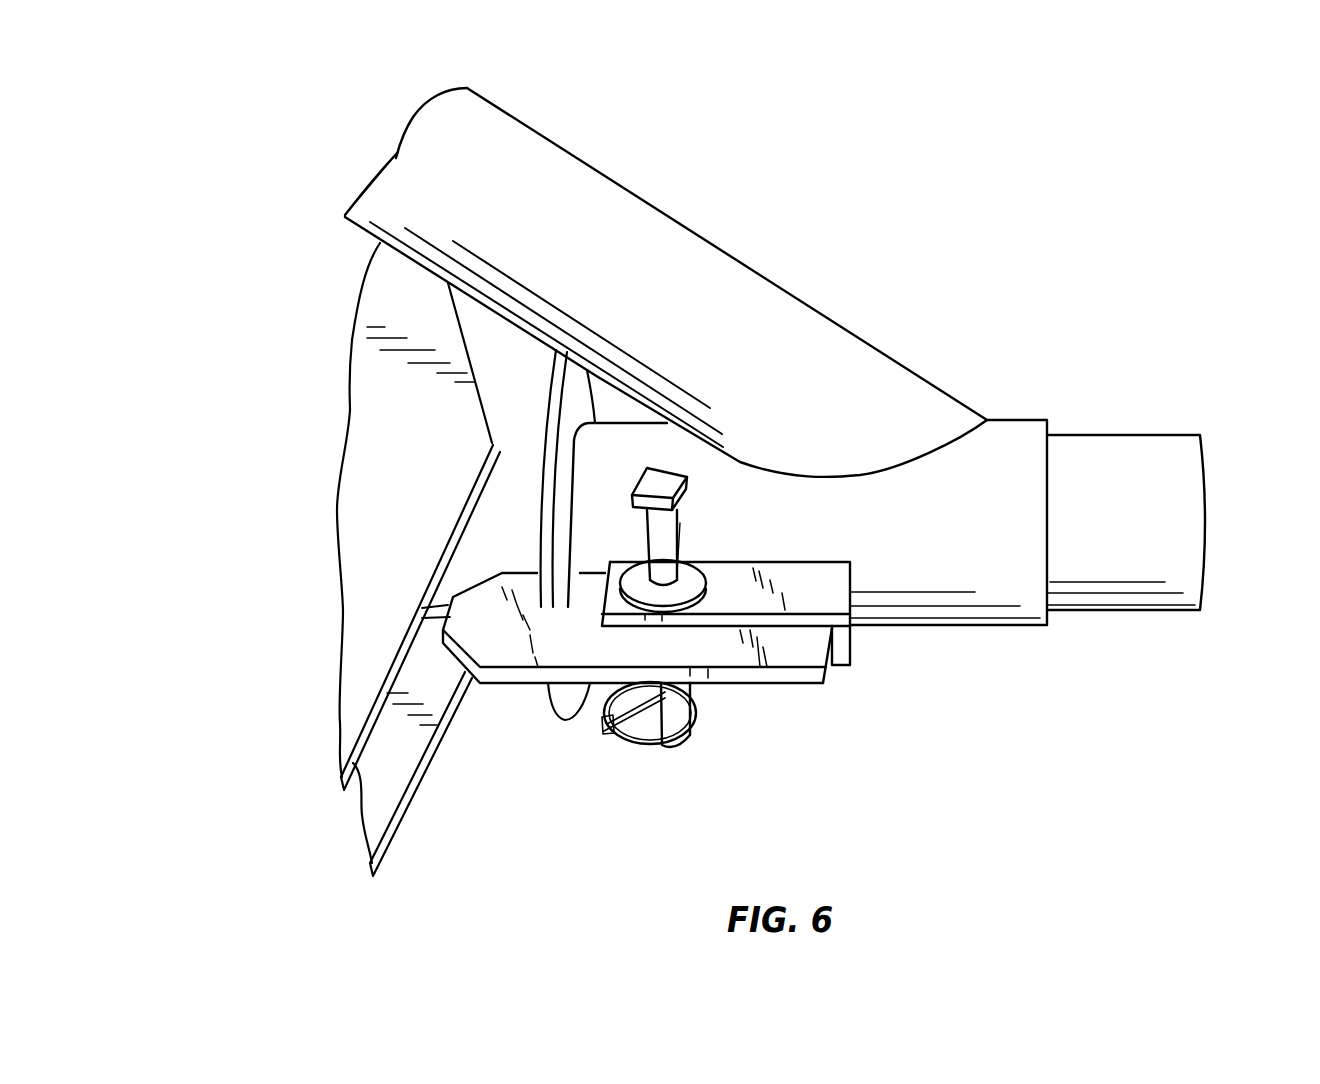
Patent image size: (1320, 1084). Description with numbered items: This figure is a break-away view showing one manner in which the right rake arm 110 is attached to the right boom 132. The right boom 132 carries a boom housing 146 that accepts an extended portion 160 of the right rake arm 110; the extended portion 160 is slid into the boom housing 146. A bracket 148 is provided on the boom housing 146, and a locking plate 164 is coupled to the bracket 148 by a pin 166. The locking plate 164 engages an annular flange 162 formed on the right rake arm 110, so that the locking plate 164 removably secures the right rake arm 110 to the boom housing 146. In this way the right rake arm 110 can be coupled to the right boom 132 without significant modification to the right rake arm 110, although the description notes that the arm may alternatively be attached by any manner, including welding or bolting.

The right rake arm 110 is at (387, 590).
The right boom 132 is at (605, 210).
The boom housing 146 is at (1013, 440).
The bracket 148 is at (820, 590).
The extended portion 160 is at (1145, 457).
The annular flange 162 is at (555, 398).
The locking plate 164 is at (583, 642).
The pin 166 is at (667, 488).